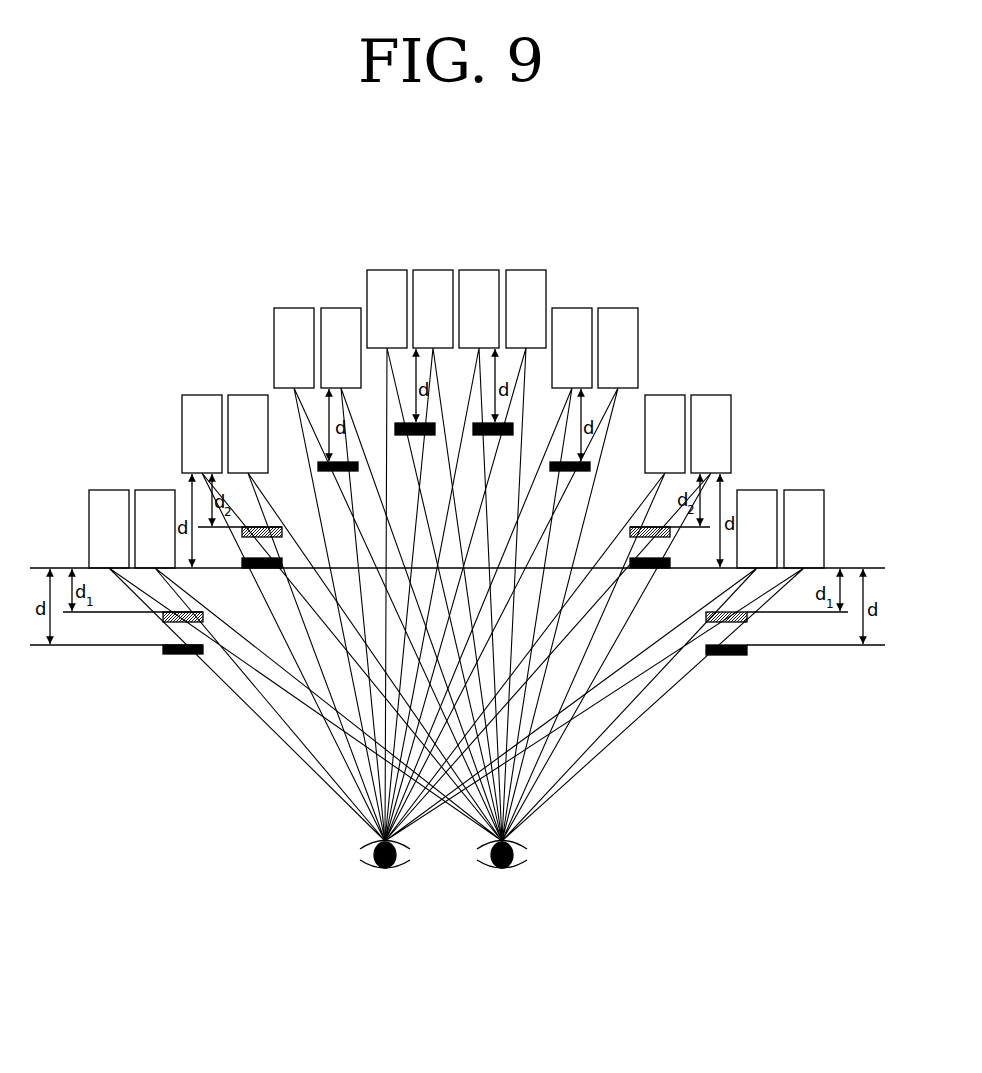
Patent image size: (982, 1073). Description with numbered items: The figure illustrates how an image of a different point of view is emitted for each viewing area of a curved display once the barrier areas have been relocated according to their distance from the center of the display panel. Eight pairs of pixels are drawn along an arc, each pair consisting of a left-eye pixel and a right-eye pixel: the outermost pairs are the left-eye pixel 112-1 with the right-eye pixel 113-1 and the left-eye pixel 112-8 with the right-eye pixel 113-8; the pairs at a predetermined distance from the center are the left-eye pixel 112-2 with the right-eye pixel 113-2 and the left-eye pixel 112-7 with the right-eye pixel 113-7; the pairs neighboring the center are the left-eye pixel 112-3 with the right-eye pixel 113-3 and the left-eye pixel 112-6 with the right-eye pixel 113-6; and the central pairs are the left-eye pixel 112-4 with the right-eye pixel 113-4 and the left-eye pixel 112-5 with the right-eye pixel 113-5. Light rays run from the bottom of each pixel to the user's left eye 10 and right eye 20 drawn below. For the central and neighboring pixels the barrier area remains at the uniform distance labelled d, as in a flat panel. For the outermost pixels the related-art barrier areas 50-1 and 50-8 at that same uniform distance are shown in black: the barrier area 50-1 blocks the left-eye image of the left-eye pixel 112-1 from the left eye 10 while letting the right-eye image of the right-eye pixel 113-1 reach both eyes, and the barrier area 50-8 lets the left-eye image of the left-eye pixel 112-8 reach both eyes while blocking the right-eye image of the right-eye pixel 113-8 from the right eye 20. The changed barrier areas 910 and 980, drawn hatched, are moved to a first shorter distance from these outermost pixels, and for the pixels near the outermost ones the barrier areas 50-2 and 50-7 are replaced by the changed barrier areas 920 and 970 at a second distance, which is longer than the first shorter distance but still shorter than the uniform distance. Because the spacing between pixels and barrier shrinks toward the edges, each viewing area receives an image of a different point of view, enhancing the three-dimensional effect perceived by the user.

The left-eye pixel 112-1 is at (108, 490).
The left-eye pixel 112-2 is at (202, 395).
The left-eye pixel 112-3 is at (293, 308).
The left-eye pixel 112-4 is at (385, 270).
The left-eye pixel 112-5 is at (497, 270).
The left-eye pixel 112-6 is at (588, 308).
The left-eye pixel 112-7 is at (678, 395).
The left-eye pixel 112-8 is at (772, 490).
The right-eye pixel 113-1 is at (145, 490).
The right-eye pixel 113-2 is at (237, 395).
The right-eye pixel 113-3 is at (330, 308).
The right-eye pixel 113-4 is at (423, 270).
The right-eye pixel 113-5 is at (530, 270).
The right-eye pixel 113-6 is at (652, 294).
The right-eye pixel 113-7 is at (742, 378).
The right-eye pixel 113-8 is at (837, 473).
The related-art barrier area 50-1 is at (183, 654).
The related-art barrier area 50-2 is at (242, 530).
The related-art barrier area 50-7 is at (660, 530).
The related-art barrier area 50-8 is at (715, 655).
The changed barrier area 910 is at (168, 623).
The changed barrier area 920 is at (262, 569).
The changed barrier area 970 is at (648, 569).
The changed barrier area 980 is at (728, 623).
The user's left eye 10 is at (368, 868).
The user's right eye 20 is at (511, 868).